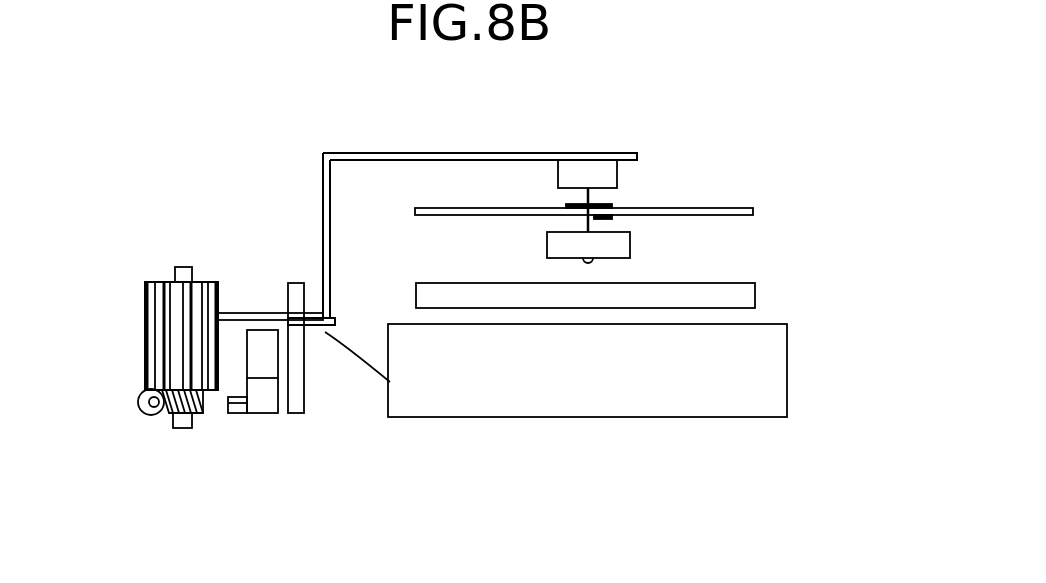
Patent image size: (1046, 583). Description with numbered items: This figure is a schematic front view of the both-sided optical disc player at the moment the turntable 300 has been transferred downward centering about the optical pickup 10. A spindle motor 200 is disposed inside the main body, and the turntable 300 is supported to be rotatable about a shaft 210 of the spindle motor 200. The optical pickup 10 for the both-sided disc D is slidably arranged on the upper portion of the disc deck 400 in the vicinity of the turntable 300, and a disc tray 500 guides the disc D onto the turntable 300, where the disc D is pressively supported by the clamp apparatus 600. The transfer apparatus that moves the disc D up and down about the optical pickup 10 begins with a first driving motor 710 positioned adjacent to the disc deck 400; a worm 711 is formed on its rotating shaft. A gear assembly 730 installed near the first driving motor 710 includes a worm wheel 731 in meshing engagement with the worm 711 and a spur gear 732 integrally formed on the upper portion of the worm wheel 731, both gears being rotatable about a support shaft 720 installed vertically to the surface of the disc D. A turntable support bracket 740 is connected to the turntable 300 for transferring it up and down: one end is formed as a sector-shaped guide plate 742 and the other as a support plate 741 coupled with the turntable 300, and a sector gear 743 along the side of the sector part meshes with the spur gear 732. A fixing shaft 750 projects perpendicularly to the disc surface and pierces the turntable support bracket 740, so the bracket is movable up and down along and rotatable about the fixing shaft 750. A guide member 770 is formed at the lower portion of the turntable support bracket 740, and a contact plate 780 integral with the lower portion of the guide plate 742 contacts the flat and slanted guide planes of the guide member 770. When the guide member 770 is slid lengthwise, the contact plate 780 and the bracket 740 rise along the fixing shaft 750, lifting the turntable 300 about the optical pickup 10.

The optical pickup 10 is at (545, 247).
The spindle motor 200 is at (563, 178).
The shaft 210 is at (592, 215).
The turntable 300 is at (557, 202).
The disc deck 400 is at (775, 383).
The disc tray 500 is at (750, 297).
The clamp apparatus 600 is at (605, 227).
The first driving motor 710 is at (138, 402).
The worm 711 is at (160, 410).
The support shaft 720 is at (185, 268).
The gear assembly 730 is at (151, 335).
The worm wheel 731 is at (203, 402).
The spur gear 732 is at (158, 282).
The turntable support bracket 740 is at (423, 192).
The support plate 741 is at (418, 155).
The guide plate 742 is at (330, 206).
The sector gear 743 is at (232, 332).
The fixing shaft 750 is at (300, 300).
The guide member 770 is at (283, 435).
The contact plate 780 is at (392, 399).
The both-sided disc D is at (728, 208).